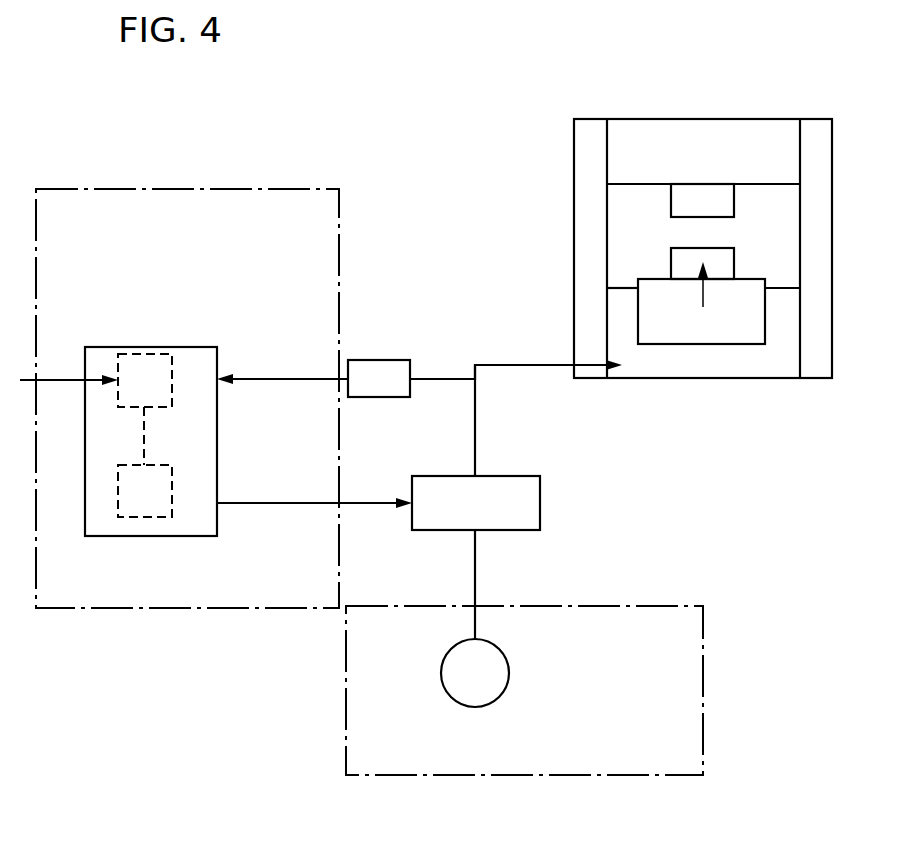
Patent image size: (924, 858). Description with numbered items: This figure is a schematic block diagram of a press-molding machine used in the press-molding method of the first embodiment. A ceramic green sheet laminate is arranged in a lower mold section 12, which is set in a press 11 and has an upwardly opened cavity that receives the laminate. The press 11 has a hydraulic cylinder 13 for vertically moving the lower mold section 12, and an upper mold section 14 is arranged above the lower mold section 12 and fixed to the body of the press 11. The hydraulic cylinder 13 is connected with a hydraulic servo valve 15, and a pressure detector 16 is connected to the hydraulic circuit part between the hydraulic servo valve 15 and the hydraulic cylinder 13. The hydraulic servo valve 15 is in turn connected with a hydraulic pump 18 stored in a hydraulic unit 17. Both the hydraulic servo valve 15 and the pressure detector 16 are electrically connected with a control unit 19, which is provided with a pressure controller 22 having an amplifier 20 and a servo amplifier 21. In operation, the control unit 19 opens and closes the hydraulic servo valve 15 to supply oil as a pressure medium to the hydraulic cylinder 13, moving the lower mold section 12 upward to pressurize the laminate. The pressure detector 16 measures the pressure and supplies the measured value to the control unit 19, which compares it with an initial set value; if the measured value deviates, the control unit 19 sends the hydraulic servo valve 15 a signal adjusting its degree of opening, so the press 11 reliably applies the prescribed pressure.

The press 11 is at (817, 116).
The lower mold section 12 is at (680, 260).
The hydraulic cylinder 13 is at (693, 365).
The upper mold section 14 is at (678, 202).
The hydraulic servo valve 15 is at (540, 497).
The pressure detector 16 is at (382, 360).
The hydraulic unit 17 is at (703, 630).
The hydraulic pump 18 is at (475, 697).
The control unit 19 is at (339, 235).
The amplifier 20 is at (155, 355).
The servo amplifier 21 is at (137, 517).
The pressure controller 22 is at (205, 536).